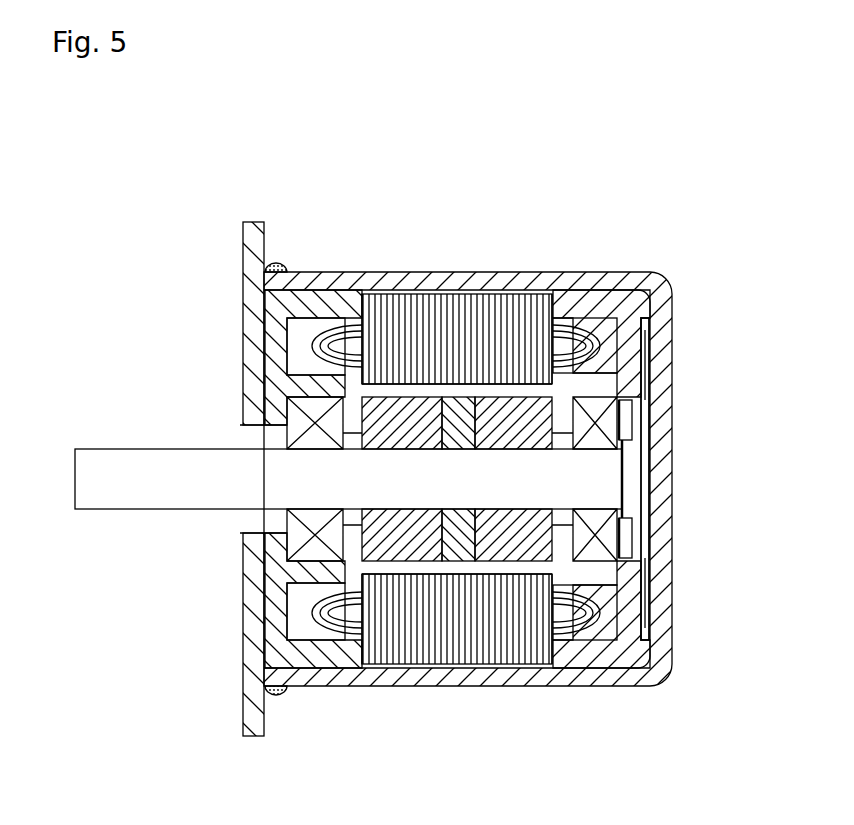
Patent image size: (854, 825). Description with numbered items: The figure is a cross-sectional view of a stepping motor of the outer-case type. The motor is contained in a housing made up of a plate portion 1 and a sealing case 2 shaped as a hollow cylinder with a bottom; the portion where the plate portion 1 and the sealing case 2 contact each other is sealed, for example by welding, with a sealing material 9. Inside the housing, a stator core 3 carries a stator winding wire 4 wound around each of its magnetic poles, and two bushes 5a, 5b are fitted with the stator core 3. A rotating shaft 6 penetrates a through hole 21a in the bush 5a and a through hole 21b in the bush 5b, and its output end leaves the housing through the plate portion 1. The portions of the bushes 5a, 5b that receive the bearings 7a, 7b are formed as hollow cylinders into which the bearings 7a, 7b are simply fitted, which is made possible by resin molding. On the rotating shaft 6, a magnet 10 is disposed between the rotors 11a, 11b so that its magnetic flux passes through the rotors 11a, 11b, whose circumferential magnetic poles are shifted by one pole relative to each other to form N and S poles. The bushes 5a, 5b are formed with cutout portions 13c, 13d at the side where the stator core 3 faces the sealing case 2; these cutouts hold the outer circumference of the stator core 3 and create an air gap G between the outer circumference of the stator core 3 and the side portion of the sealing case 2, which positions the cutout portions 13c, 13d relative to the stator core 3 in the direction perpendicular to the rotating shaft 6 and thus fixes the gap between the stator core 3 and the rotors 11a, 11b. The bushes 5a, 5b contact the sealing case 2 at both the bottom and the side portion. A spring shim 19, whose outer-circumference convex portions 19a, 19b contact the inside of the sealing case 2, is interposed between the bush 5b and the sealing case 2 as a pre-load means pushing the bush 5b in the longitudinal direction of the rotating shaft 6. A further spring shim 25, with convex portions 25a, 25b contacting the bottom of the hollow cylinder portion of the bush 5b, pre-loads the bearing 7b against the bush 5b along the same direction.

The plate portion 1 is at (248, 238).
The sealing case 2 is at (657, 268).
The stator core 3 is at (445, 330).
The stator winding wire 4 is at (345, 296).
The bush 5a is at (322, 300).
The bush 5b is at (590, 300).
The rotating shaft 6 is at (125, 465).
The bearing 7a is at (287, 433).
The bearing 7b is at (612, 420).
The sealing material 9 is at (278, 262).
The magnet 10 is at (462, 537).
The rotor 11a is at (402, 540).
The rotor 11b is at (512, 537).
The cutout portion 13c is at (368, 298).
The cutout portion 13d is at (540, 298).
The air gap G is at (492, 392).
The spring shim 19 is at (658, 482).
The convex portion 19a is at (645, 380).
The convex portion 19b is at (648, 568).
The through hole 21a is at (318, 378).
The through hole 21b is at (635, 345).
The spring shim 25 is at (633, 395).
The convex portion 25a is at (630, 433).
The convex portion 25b is at (630, 532).